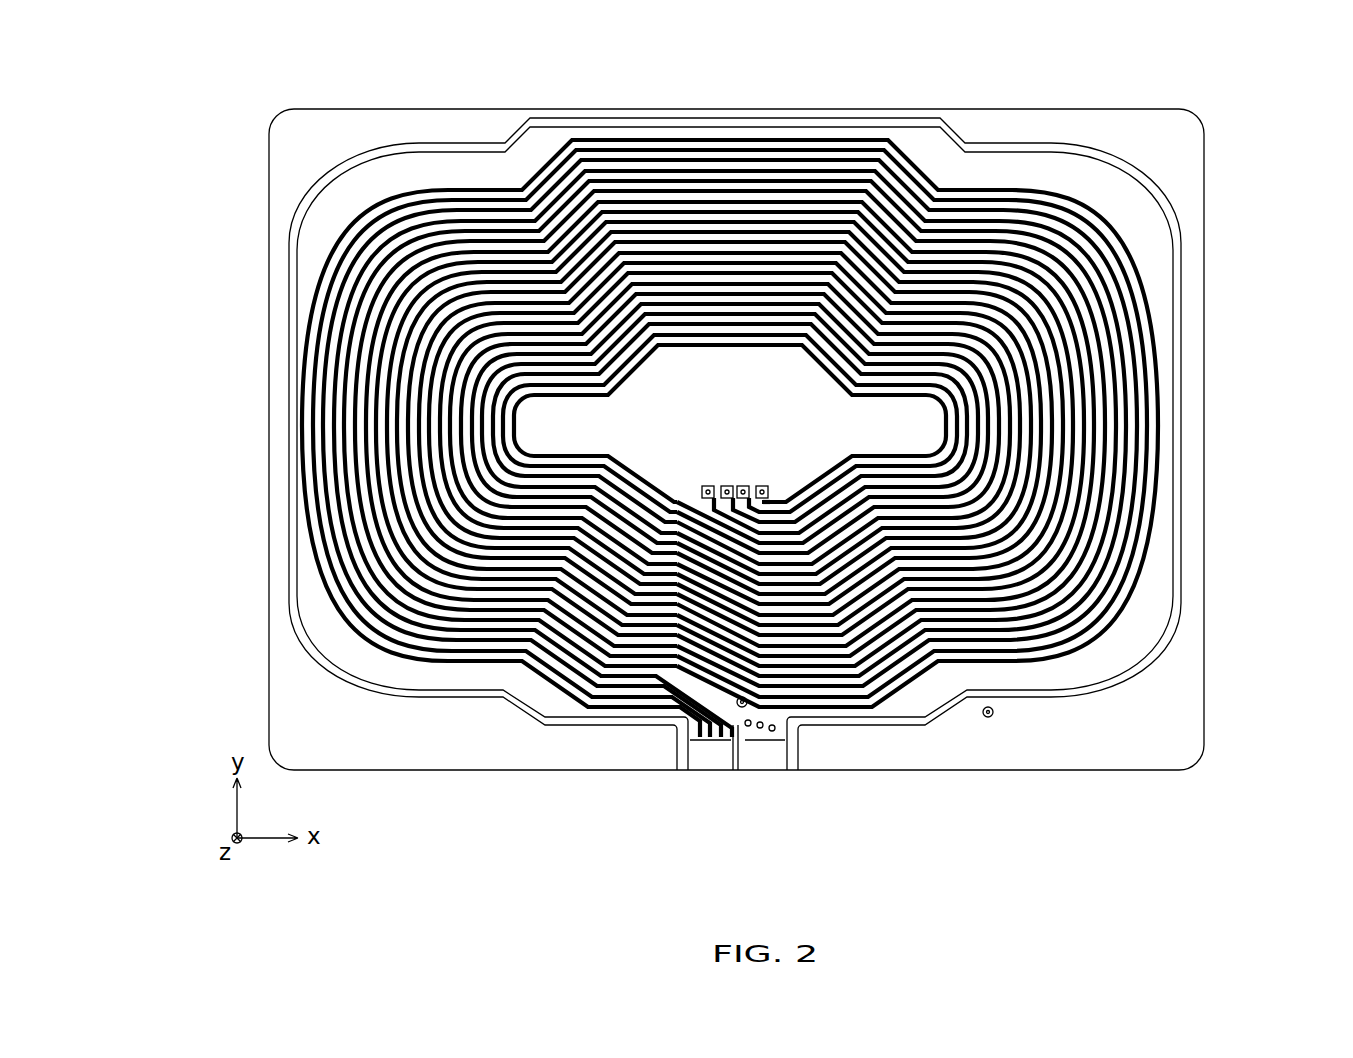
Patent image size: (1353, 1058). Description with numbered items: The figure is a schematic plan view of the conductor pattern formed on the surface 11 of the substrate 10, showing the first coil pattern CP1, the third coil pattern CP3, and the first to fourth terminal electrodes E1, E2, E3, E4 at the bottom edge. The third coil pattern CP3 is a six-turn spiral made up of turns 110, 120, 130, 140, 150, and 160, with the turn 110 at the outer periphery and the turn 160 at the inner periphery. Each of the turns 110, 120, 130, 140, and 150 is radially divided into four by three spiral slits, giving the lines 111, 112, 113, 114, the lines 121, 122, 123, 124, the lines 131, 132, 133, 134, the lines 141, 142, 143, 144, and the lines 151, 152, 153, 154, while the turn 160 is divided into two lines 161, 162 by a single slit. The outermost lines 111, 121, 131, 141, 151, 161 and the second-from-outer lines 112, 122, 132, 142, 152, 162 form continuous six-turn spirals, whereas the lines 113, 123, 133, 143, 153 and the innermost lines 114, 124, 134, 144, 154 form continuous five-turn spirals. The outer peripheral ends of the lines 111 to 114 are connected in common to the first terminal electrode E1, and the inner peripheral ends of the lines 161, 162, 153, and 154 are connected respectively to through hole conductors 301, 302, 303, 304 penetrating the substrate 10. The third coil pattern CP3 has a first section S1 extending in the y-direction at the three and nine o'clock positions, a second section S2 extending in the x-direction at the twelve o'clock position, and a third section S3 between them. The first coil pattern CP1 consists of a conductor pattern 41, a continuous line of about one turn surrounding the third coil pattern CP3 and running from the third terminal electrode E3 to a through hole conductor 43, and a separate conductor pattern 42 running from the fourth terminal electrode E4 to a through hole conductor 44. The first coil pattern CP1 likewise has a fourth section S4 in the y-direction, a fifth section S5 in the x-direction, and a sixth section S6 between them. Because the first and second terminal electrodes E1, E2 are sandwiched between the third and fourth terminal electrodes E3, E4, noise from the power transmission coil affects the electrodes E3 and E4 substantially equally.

The substrate 10 is at (1210, 155).
The surface 11 is at (1120, 125).
The turn 110 is at (817, 438).
The line 111 is at (1153, 320).
The line 112 is at (1144, 333).
The line 113 is at (1134, 348).
The line 114 is at (1122, 365).
The turn 120 is at (838, 423).
The line 121 is at (1118, 442).
The line 122 is at (1105, 455).
The line 123 is at (1093, 470).
The line 124 is at (1083, 490).
The turn 130 is at (604, 438).
The line 131 is at (404, 547).
The line 132 is at (413, 533).
The line 133 is at (420, 520).
The line 134 is at (430, 508).
The turn 140 is at (583, 423).
The line 141 is at (440, 466).
The line 142 is at (454, 455).
The line 143 is at (466, 444).
The line 144 is at (478, 432).
The turn 150 is at (561, 407).
The line 151 is at (466, 407).
The line 152 is at (480, 402).
The line 153 is at (495, 392).
The line 154 is at (508, 382).
The turn 160 is at (730, 419).
The line 161 is at (693, 337).
The line 162 is at (673, 347).
The through hole conductor 301 is at (745, 486).
The through hole conductor 302 is at (768, 490).
The through hole conductor 303 is at (710, 486).
The through hole conductor 304 is at (727, 486).
The conductor pattern 41 is at (460, 697).
The conductor pattern 42 is at (880, 727).
The through hole conductor 43 is at (738, 705).
The through hole conductor 44 is at (991, 717).
The first terminal electrode E1 is at (710, 757).
The second terminal electrode E2 is at (762, 757).
The third terminal electrode E3 is at (683, 757).
The fourth terminal electrode E4 is at (795, 757).
The first section S1 is at (540, 427).
The second section S2 is at (778, 127).
The third section S3 is at (336, 219).
The fourth section S4 is at (272, 259).
The fifth section S5 is at (682, 103).
The sixth section S6 is at (385, 132).
The first coil pattern CP1 is at (360, 689).
The third coil pattern CP3 is at (1060, 667).